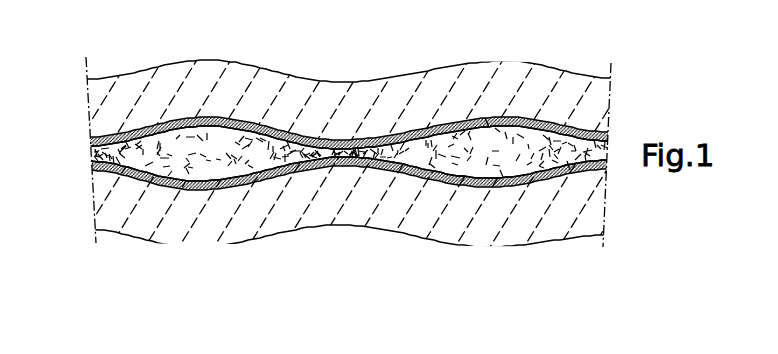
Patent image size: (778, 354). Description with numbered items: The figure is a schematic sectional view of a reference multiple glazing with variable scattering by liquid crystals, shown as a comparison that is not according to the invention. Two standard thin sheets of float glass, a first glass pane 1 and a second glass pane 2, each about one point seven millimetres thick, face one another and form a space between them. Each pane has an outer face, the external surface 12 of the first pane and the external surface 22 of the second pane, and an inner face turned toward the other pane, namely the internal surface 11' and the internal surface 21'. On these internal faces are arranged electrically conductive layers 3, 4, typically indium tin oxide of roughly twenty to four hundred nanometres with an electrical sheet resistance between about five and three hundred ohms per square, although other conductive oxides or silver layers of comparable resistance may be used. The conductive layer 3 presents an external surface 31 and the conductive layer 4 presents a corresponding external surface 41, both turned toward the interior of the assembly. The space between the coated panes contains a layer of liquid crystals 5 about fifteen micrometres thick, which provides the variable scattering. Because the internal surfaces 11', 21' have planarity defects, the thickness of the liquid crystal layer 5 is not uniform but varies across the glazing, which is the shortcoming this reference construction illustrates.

The sheet of float glass 1 is at (127, 78).
The outer surface of first layer 12 is at (187, 58).
The internal surface 11' is at (349, 116).
The second outer layer 2 is at (153, 229).
The outer surface of second layer 22 is at (223, 245).
The internal surface 21' is at (349, 182).
The electrically conductive layer 3 is at (90, 141).
The external surface 31 is at (487, 126).
The electrically conductive layer 4 is at (92, 163).
The second barrier film portion 41 is at (569, 168).
The layer of liquid crystals 5 is at (448, 145).